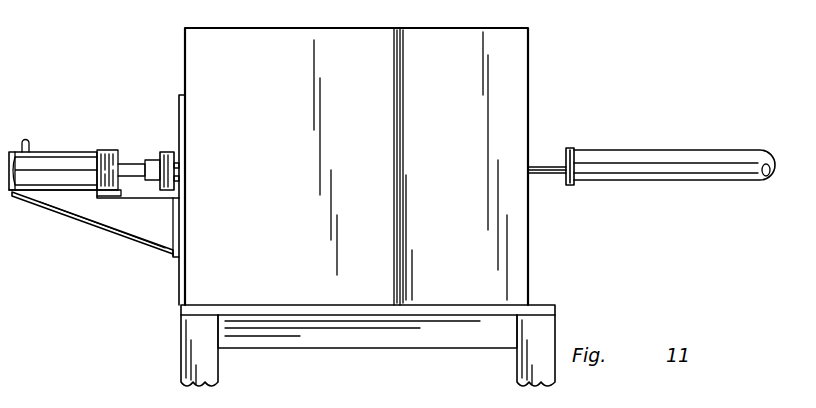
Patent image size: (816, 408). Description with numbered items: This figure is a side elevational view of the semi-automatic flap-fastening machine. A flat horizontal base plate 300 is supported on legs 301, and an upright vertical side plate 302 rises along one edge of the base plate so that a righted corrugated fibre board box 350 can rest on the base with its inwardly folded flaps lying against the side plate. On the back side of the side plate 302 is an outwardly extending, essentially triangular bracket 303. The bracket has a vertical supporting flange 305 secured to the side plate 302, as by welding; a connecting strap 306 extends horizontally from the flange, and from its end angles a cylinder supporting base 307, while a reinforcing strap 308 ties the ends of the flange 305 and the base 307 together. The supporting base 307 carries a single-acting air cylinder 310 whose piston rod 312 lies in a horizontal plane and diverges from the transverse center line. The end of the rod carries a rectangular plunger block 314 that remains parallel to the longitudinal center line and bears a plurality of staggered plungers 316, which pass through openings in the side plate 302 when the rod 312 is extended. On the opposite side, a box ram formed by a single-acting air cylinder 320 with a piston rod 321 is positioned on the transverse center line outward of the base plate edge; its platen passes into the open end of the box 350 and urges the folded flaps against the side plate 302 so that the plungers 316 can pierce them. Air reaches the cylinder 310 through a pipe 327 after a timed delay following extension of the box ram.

The base plate 300 is at (285, 307).
The legs 301 is at (218, 372).
The side plate 302 is at (182, 113).
The bracket 303 is at (104, 239).
The supporting flange 305 is at (176, 228).
The connecting strap 306 is at (150, 195).
The cylinder supporting base 307 is at (58, 193).
The reinforcing strap 308 is at (152, 243).
The air cylinder 310 is at (54, 157).
The piston rod 312 is at (125, 164).
The plunger block 314 is at (174, 158).
The plungers 316 is at (177, 179).
The air cylinder 320 is at (660, 152).
The piston rod 321 is at (544, 164).
The pipe 327 is at (26, 142).
The box 350 is at (529, 93).